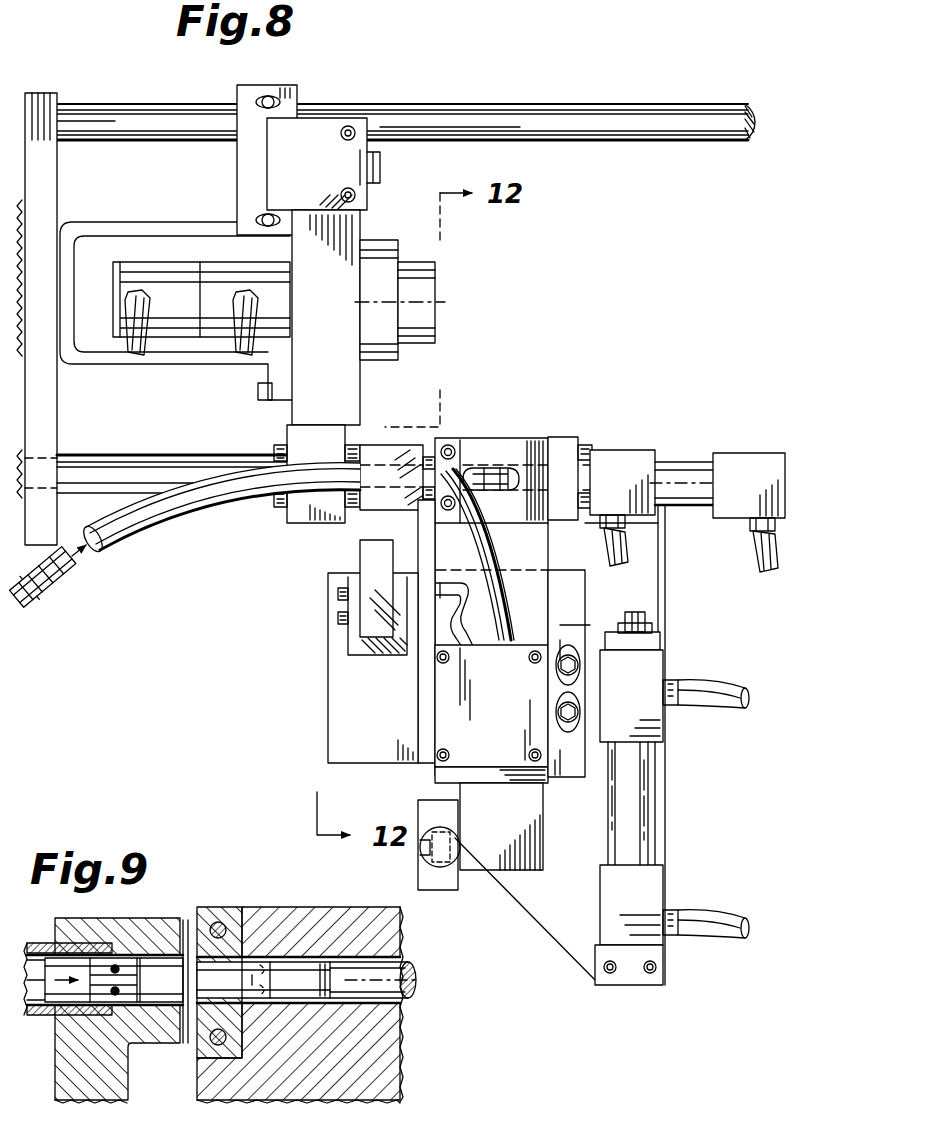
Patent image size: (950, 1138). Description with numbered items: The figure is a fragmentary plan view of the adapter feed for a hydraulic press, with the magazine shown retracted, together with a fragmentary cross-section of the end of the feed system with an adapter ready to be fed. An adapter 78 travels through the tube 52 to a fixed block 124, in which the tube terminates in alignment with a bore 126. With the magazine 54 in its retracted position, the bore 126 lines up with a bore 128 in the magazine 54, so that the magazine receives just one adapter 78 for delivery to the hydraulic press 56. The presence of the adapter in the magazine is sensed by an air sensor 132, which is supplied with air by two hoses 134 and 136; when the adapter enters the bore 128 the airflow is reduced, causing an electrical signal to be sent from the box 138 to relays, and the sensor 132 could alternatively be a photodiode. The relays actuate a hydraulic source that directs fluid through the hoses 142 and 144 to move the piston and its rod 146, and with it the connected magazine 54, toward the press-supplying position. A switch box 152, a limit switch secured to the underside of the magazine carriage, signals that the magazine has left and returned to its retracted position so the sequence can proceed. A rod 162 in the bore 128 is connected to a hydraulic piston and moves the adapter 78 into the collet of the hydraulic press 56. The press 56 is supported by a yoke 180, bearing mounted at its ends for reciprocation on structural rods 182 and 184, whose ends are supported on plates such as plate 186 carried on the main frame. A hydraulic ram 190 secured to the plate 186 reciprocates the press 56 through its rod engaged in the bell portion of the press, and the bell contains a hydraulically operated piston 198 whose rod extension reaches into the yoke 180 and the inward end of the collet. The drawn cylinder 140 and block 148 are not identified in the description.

In FIG. 8, the tube 52 is at (163, 525).
In FIG. 9, the tube 52 is at (35, 1016).
In FIG. 8, the magazine 54 is at (428, 766).
In FIG. 9, the magazine 54 is at (406, 1047).
In FIG. 8, the hydraulic press 56 is at (442, 289).
In FIG. 8, the adapter 78 is at (68, 573).
In FIG. 9, the adapter 78 is at (162, 990).
In FIG. 8, the fixed block 124 is at (372, 506).
In FIG. 9, the fixed block 124 is at (56, 938).
In FIG. 8, the bore 126 is at (395, 487).
In FIG. 9, the bore 126 is at (184, 935).
In FIG. 8, the bore 128 is at (512, 468).
In FIG. 9, the bore 128 is at (268, 955).
In FIG. 8, the air sensor 132 is at (451, 433).
In FIG. 8, the hose 134 is at (487, 548).
In FIG. 8, the hose 136 is at (456, 646).
In FIG. 8, the box 138 is at (511, 738).
In FIG. 8, the cylinder 140 is at (640, 802).
In FIG. 8, the hose 142 is at (714, 925).
In FIG. 8, the hose 144 is at (716, 690).
In FIG. 8, the piston rod 146 is at (645, 620).
In FIG. 8, the block 148 is at (512, 852).
In FIG. 8, the switch box 152 is at (443, 882).
In FIG. 9, the rod 162 is at (396, 983).
In FIG. 8, the yoke 180 is at (350, 303).
In FIG. 8, the structural rod 182 is at (522, 124).
In FIG. 8, the structural rod 184 is at (680, 456).
In FIG. 8, the plate 186 is at (45, 160).
In FIG. 8, the hydraulic ram 190 is at (22, 392).
In FIG. 8, the hydraulically operated piston 198 is at (170, 312).